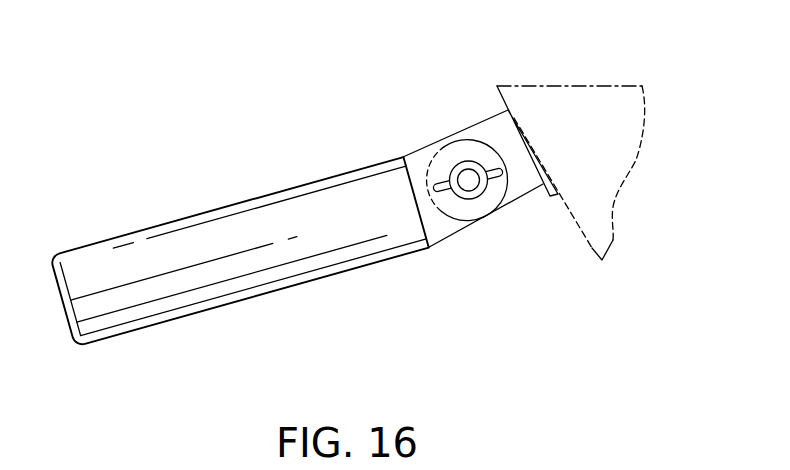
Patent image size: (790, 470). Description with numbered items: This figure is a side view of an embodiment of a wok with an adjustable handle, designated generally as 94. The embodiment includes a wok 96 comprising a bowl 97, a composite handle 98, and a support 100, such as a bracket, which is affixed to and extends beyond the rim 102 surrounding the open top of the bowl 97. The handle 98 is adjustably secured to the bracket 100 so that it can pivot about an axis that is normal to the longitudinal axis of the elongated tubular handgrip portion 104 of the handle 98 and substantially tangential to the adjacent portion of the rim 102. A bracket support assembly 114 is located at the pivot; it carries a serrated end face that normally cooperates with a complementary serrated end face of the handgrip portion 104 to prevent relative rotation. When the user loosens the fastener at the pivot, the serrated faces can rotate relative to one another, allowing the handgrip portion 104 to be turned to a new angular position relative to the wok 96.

The wok with adjustable handle 94 is at (252, 179).
The wok 96 is at (610, 139).
The bowl 97 is at (588, 252).
The composite handle 98 is at (150, 327).
The support 100 is at (539, 196).
The rim 102 is at (497, 87).
The handgrip portion 104 is at (308, 282).
The bracket support assembly 114 is at (487, 133).